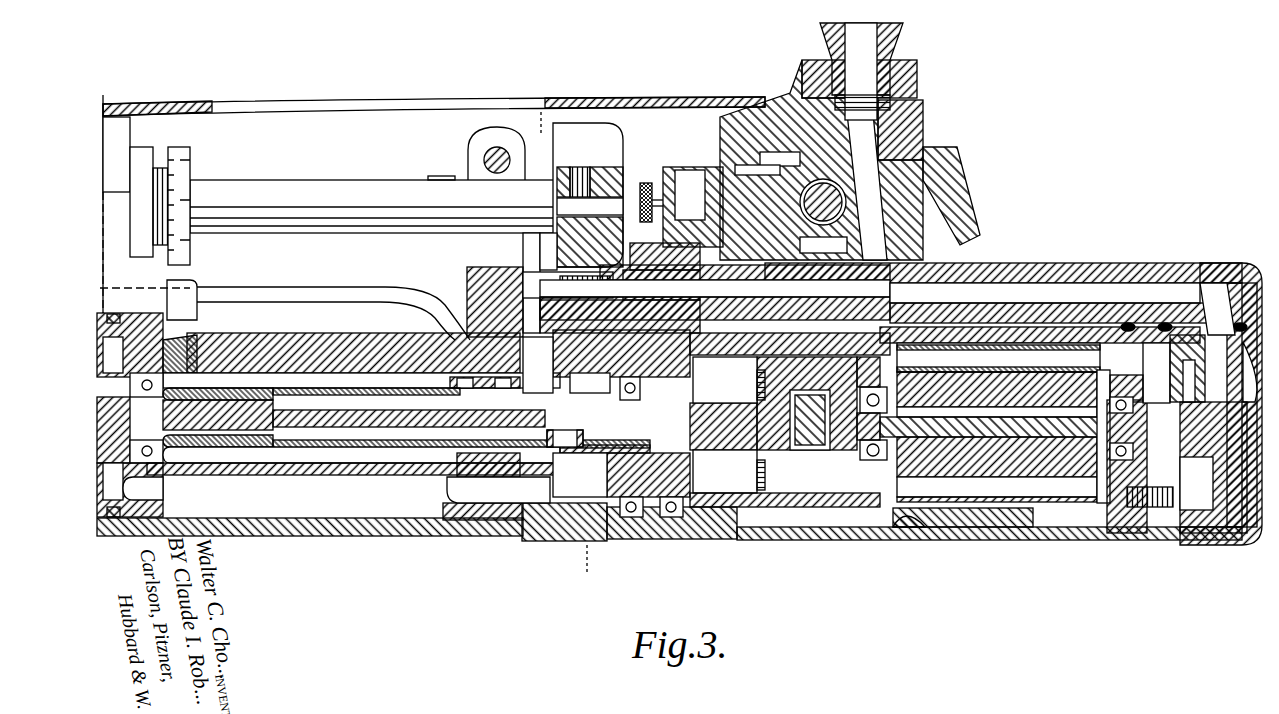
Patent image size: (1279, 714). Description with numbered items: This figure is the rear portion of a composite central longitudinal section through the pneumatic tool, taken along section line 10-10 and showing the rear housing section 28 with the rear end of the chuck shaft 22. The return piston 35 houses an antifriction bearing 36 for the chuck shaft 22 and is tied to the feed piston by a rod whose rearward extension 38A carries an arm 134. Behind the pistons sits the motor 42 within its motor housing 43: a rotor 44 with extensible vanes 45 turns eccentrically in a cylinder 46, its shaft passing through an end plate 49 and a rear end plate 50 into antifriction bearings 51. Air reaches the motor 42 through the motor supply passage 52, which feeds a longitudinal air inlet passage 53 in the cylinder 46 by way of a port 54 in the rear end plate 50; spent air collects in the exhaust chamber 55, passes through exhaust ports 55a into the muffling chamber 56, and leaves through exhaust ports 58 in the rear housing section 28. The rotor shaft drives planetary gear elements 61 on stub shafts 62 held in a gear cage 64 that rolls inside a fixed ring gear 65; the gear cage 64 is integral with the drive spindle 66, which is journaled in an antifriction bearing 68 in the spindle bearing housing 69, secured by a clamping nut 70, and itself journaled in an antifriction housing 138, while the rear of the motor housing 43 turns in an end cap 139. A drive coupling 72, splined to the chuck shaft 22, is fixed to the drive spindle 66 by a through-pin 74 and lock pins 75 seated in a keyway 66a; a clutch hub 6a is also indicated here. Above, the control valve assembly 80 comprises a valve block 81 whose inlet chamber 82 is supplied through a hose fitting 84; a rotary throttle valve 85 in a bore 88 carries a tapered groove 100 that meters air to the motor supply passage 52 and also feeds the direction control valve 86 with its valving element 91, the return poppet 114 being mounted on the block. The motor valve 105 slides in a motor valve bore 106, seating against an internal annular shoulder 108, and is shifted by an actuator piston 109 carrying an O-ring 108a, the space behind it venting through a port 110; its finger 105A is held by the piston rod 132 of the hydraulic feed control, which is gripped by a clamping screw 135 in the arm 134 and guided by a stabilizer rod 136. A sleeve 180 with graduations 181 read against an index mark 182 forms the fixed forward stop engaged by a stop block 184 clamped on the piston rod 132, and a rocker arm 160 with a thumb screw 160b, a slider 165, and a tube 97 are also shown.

The section line 10- 10 is at (550, 122).
The chuck shaft 22 is at (352, 405).
The rear housing section 28 is at (968, 540).
The return piston 35 is at (150, 500).
The antifriction bearing 36 is at (160, 463).
The rearward extension 38A is at (240, 470).
The motor 42 is at (1050, 527).
The motor housing 43 is at (990, 563).
The rotor 44 is at (978, 481).
The extensible vanes 45 is at (925, 485).
The cylinder 46 is at (1075, 510).
The end plate 49 is at (915, 467).
The rear end plate 50 is at (1090, 487).
The antifriction bearings 51 is at (1176, 472).
The motor supply passage 52 is at (920, 230).
The longitudinal air inlet passage 53 is at (1038, 393).
The port 54 is at (1105, 375).
The exhaust chamber 55 is at (935, 352).
The exhaust ports 55a is at (1040, 325).
The muffling chamber 56 is at (908, 535).
The exhaust ports 58 is at (738, 535).
The planetary gear elements 61 is at (812, 510).
The stub shafts 62 is at (808, 412).
The gear cage 64 is at (858, 415).
The fixed ring gear 65 is at (780, 470).
The drive spindle 66 is at (723, 403).
The keyway 66a is at (575, 428).
The antifriction bearing 68 is at (610, 480).
The spindle bearing housing 69 is at (790, 106).
The clutch hub 6a is at (805, 410).
The clamping nut 70 is at (670, 520).
The drive coupling 72 is at (285, 445).
The through-pin 74 is at (553, 417).
The lock pins 75 is at (535, 453).
The control valve assembly 80 is at (918, 60).
The valve block 81 is at (917, 70).
The inlet chamber 82 is at (860, 113).
The hose fitting 84 is at (832, 48).
The throttle valve 85 is at (930, 122).
The direction control valve 86 is at (808, 200).
The bore 88 is at (868, 188).
The valving element 91 is at (800, 210).
The tube 97 is at (330, 295).
The tapered groove 100 is at (925, 132).
The motor valve 105 is at (595, 267).
The finger 105A is at (560, 245).
The motor valve bore 106 is at (645, 267).
The internal annular shoulder 108 is at (920, 292).
The O-ring 108a is at (865, 290).
The actuator piston 109 is at (840, 266).
The port 110 is at (710, 287).
The return poppet 114 is at (978, 223).
The piston rod 132 is at (303, 190).
The arm 134 is at (468, 160).
The clamping screw 135 is at (492, 150).
The stabilizer rod 136 is at (557, 205).
The antifriction housing 138 is at (636, 520).
The end cap 139 is at (1172, 535).
The rocker arm 160 is at (720, 195).
The thumb screw 160b is at (648, 183).
The slider 165 is at (692, 170).
The sleeve 180 is at (186, 163).
The graduations 181 is at (173, 150).
The index mark 182 is at (148, 205).
The stop block 184 is at (430, 176).